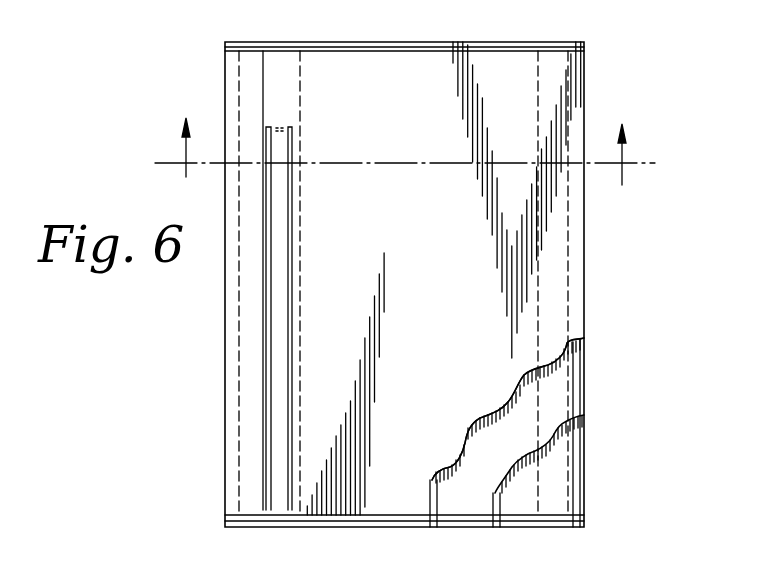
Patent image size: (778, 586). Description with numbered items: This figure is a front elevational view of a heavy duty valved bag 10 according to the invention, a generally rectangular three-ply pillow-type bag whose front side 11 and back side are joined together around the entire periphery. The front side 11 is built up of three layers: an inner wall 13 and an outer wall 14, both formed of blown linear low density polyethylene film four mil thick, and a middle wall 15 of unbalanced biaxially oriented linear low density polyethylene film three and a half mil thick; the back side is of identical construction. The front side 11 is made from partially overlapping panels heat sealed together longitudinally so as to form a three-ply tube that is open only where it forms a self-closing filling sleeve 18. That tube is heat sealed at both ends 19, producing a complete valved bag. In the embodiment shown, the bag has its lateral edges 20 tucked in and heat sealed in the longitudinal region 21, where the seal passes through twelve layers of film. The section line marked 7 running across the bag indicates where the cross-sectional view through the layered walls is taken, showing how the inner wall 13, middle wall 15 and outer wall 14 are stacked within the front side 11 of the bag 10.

The pillow-type bag 10 is at (597, 272).
The front side 11 is at (442, 266).
The inner wall 13 is at (550, 476).
The outer wall 14 is at (555, 327).
The middle wall 15 is at (557, 388).
The self-closing filling sleeve 18 is at (280, 84).
The ends 19 is at (473, 43).
The lateral edges 20 is at (585, 73).
The longitudinal region 21 is at (560, 118).
The section line 7- 7 is at (405, 155).